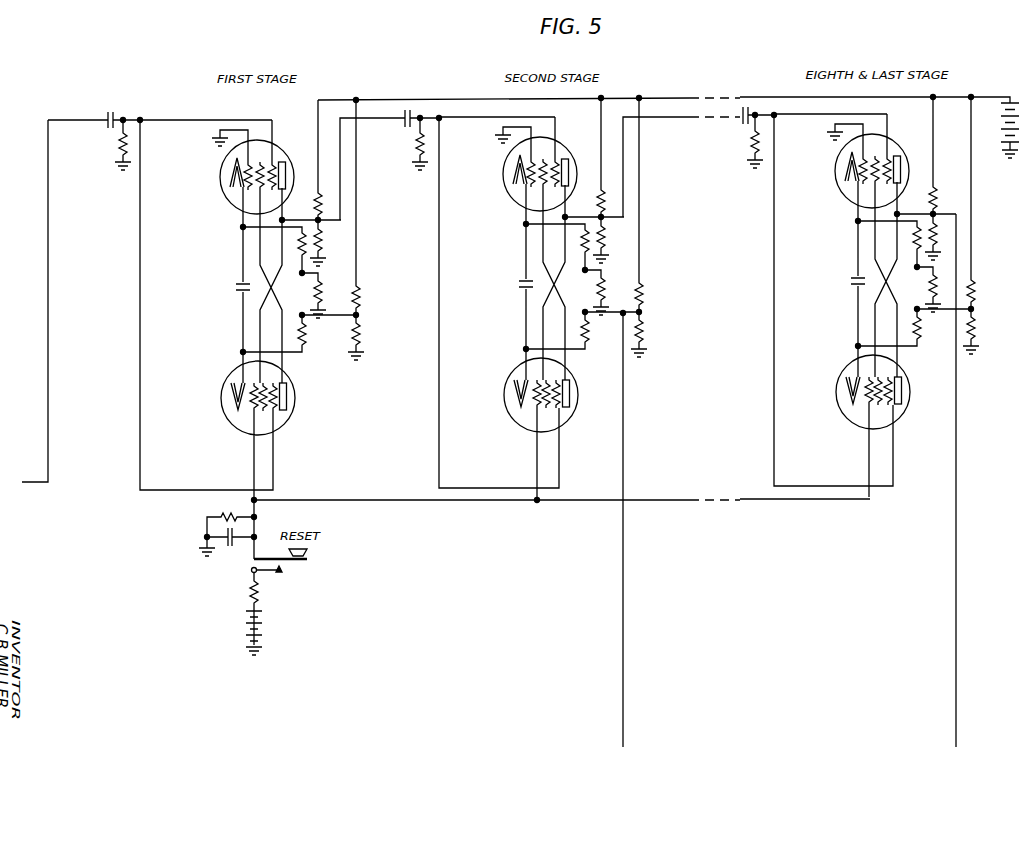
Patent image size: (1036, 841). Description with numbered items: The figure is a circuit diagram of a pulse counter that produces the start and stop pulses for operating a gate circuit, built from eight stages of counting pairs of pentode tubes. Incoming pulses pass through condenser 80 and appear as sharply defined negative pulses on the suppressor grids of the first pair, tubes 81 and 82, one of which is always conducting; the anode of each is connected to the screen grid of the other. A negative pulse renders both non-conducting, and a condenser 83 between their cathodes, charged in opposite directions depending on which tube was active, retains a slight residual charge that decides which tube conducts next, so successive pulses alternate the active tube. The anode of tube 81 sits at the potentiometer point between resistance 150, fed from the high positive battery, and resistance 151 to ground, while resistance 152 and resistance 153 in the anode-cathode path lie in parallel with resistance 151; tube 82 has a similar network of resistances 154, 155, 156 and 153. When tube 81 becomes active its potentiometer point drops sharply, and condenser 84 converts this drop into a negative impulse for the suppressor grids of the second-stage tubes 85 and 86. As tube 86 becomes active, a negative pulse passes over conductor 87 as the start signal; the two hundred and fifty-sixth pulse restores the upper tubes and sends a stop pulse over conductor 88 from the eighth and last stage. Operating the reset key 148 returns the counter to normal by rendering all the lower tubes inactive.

The condenser 80 is at (110, 108).
The tube 81 is at (220, 175).
The tube 82 is at (227, 417).
The condenser 83 is at (234, 288).
The condenser 84 is at (407, 109).
The tube 85 is at (520, 174).
The tube 86 is at (555, 395).
The conductor 87 is at (632, 576).
The conductor 88 is at (960, 450).
The reset key 148 is at (297, 559).
The resistance 150 is at (315, 203).
The resistance 151 is at (326, 241).
The resistance 152 is at (298, 254).
The resistance 153 is at (322, 290).
The resistance 154 is at (362, 289).
The resistance 155 is at (363, 334).
The resistance 156 is at (308, 334).